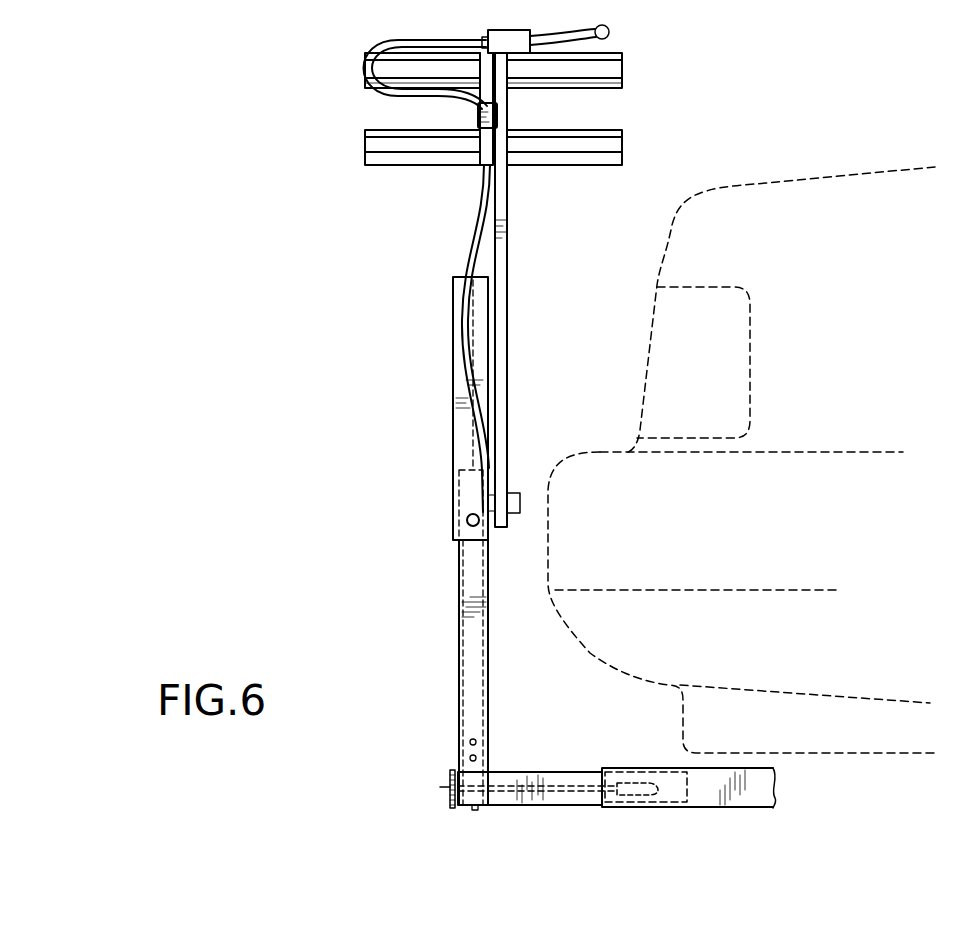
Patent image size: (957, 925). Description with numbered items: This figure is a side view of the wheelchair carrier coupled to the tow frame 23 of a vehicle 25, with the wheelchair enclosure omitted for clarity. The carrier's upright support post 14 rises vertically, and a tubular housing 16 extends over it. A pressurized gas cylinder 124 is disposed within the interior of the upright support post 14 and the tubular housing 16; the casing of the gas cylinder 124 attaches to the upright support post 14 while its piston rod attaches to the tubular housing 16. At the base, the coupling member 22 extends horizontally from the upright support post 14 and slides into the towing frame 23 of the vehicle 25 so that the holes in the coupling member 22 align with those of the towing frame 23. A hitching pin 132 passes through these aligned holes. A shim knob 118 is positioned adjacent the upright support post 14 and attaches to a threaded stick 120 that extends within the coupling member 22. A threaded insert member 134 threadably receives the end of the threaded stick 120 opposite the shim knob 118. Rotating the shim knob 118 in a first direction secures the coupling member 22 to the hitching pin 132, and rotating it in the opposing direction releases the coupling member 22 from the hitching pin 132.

The upright support post 14 is at (459, 638).
The tubular housing 16 is at (453, 385).
The coupling member 22 is at (510, 807).
The tow frame 23 is at (747, 807).
The vehicle 25 is at (783, 188).
The shim knob 118 is at (450, 785).
The threaded stick 120 is at (553, 783).
The pressurized gas cylinder 124 is at (459, 568).
The hitching pin 132 is at (653, 795).
The threaded insert member 134 is at (632, 783).